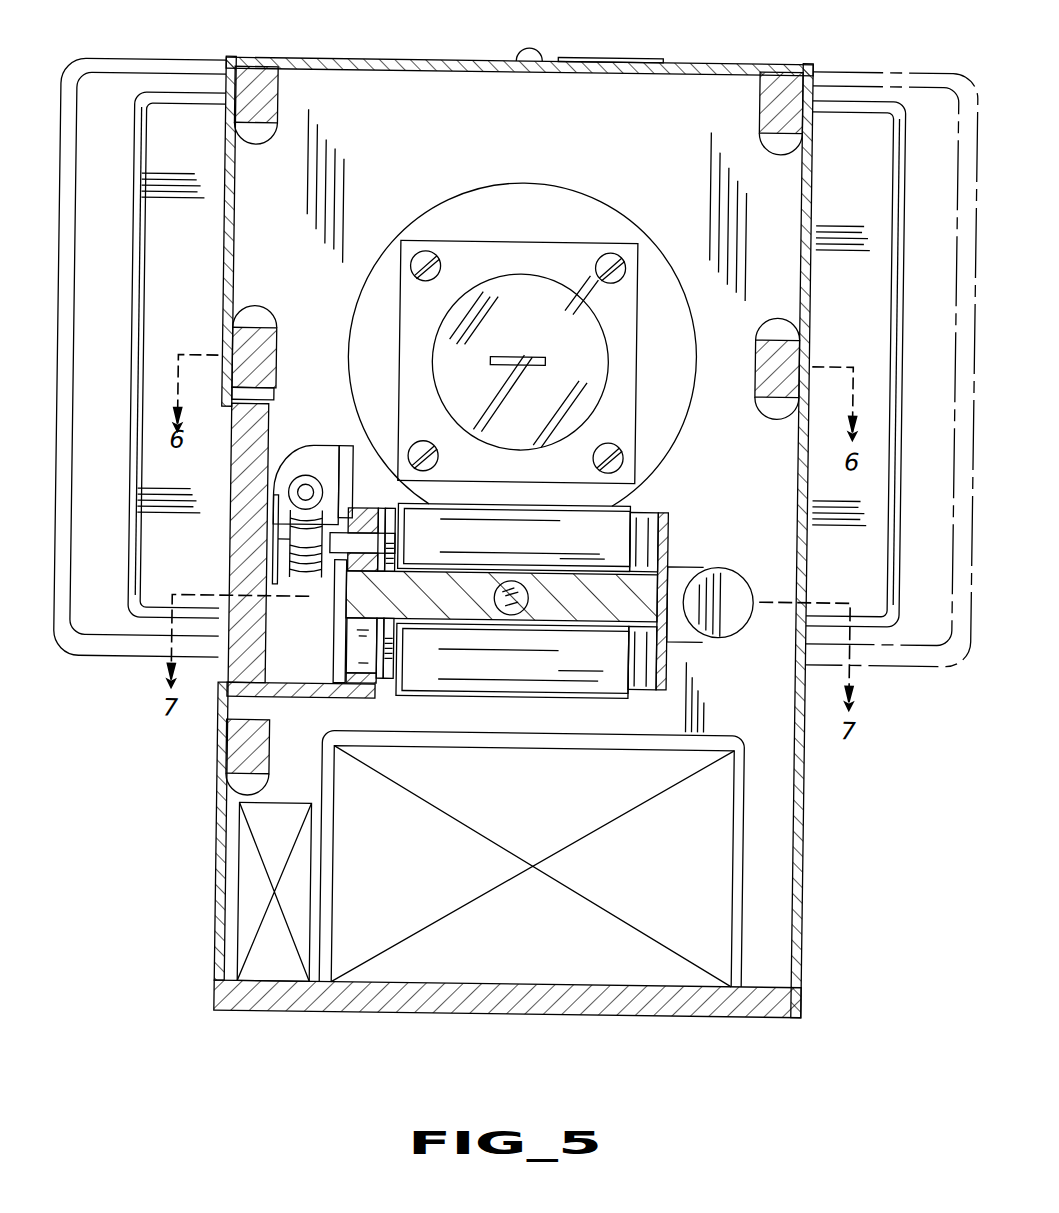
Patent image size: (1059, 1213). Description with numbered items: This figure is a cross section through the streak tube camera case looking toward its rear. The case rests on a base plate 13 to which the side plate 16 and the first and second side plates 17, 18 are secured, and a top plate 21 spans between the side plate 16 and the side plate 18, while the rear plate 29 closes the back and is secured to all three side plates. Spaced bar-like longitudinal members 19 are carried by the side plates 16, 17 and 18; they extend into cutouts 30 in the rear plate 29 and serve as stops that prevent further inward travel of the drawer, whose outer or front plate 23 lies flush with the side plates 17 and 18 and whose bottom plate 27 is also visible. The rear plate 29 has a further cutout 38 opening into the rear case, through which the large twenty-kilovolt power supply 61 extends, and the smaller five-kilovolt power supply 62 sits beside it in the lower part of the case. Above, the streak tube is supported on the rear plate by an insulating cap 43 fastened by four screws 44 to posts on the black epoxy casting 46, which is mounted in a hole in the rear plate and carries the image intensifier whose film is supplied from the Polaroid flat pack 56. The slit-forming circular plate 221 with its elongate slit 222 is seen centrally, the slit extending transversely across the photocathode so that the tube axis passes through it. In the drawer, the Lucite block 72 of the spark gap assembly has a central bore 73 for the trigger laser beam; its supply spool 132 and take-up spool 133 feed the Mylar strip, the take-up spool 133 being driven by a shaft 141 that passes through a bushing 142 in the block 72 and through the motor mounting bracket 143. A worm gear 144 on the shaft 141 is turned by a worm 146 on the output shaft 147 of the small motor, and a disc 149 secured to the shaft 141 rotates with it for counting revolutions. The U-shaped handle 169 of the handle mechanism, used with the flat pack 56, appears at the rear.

The base plate 13 is at (656, 1003).
The side plate 16 is at (808, 274).
The first side plate 17 is at (220, 893).
The second side plate 18 is at (228, 243).
The bar-like longitudinal members 19 is at (263, 80).
The top plate 21 is at (426, 66).
The outer or front plate 23 is at (240, 576).
The bottom plate 27 is at (336, 698).
The rear plate 29 is at (526, 109).
The cutouts 30 is at (263, 143).
The cutout 38 is at (742, 742).
The cap 43 is at (466, 255).
The screws 44 is at (418, 258).
The black epoxy casting 46 is at (570, 216).
The Polaroid flat pack 56 is at (126, 368).
The 20 KV power supply 61 is at (503, 978).
The 5 KV power supply 62 is at (292, 978).
The block 72 is at (668, 642).
The central bore 73 is at (512, 616).
The supply spool 132 is at (585, 663).
The take-up spool 133 is at (638, 524).
The shaft 141 is at (372, 540).
The bushing 142 is at (364, 508).
The motor mounting bracket 143 is at (320, 452).
The worm gear 144 is at (318, 582).
The worm 146 is at (292, 490).
The output shaft 147 is at (300, 515).
The disc 149 is at (275, 590).
The U-shaped member or handle 169 is at (112, 640).
The circular plate 221 is at (432, 374).
The elongate slit 222 is at (544, 362).